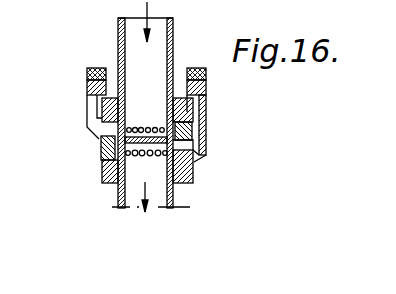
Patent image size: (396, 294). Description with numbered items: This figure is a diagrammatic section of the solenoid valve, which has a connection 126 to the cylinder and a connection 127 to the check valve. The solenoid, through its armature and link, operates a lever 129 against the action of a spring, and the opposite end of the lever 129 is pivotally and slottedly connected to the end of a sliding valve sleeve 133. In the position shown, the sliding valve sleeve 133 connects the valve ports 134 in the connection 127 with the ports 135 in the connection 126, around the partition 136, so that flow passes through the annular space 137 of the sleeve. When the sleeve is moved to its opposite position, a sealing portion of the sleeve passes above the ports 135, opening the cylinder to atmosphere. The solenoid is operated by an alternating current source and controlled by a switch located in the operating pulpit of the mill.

The connection to the cylinder 126 is at (158, 203).
The connection to the check valve 127 is at (157, 38).
The lever 129 is at (101, 68).
The sliding valve sleeve 133 is at (185, 128).
The valve ports 134 is at (152, 127).
The ports 135 is at (118, 160).
The partition 136 is at (104, 146).
The annular space 137 is at (183, 152).